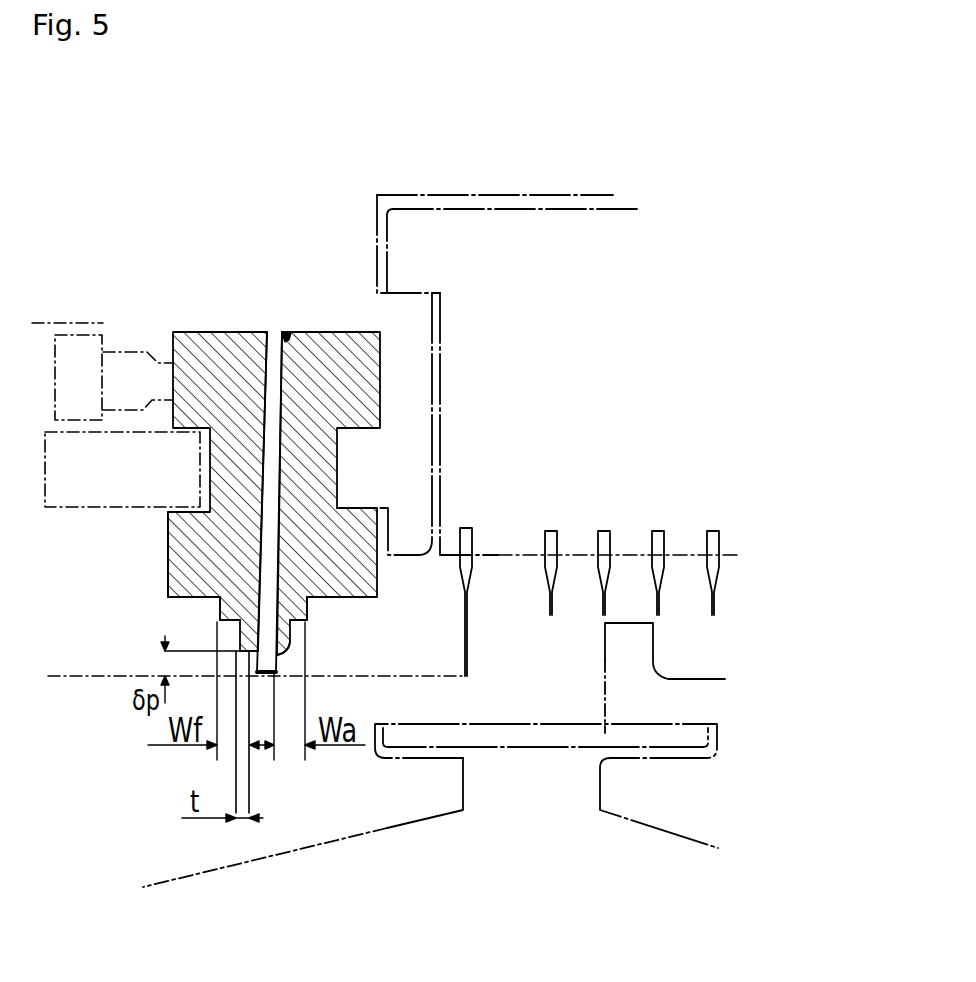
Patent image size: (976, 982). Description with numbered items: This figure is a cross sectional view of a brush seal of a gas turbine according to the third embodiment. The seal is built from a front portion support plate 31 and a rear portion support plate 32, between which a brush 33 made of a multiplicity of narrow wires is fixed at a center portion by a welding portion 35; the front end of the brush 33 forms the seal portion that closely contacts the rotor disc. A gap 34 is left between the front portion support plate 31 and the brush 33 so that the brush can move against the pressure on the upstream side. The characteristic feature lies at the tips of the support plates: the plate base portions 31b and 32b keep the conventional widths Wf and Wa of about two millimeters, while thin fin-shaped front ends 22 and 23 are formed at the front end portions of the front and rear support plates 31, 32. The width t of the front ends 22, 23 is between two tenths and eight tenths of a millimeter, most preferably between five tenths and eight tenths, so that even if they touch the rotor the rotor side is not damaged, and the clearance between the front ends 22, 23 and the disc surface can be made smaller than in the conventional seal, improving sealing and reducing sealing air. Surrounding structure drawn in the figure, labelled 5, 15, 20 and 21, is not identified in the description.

The base plate 5 is at (366, 803).
The upper frame member 15 is at (538, 195).
The side wall 20 is at (518, 243).
The die body 21 is at (155, 548).
The front end of front support plate 22 is at (240, 640).
The front end of rear support plate 23 is at (292, 645).
The front portion support plate 31 is at (220, 332).
The plate base portion 31b is at (215, 608).
The rear portion support plate 32 is at (335, 332).
The plate base portion 32b is at (310, 624).
The brush 33 is at (270, 330).
The gap 34 is at (262, 528).
The welding portion 35 is at (287, 328).